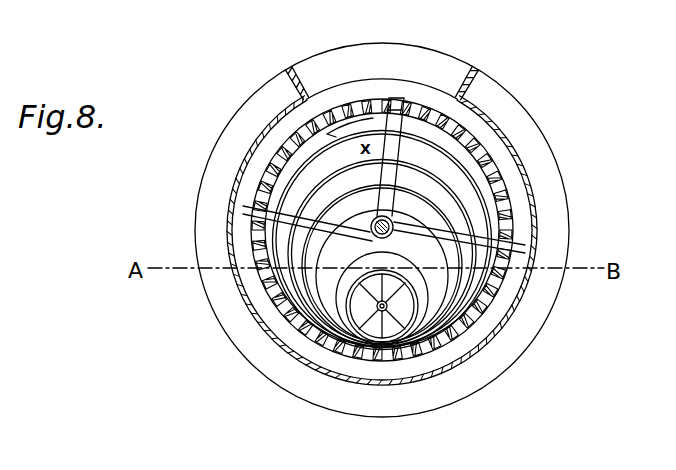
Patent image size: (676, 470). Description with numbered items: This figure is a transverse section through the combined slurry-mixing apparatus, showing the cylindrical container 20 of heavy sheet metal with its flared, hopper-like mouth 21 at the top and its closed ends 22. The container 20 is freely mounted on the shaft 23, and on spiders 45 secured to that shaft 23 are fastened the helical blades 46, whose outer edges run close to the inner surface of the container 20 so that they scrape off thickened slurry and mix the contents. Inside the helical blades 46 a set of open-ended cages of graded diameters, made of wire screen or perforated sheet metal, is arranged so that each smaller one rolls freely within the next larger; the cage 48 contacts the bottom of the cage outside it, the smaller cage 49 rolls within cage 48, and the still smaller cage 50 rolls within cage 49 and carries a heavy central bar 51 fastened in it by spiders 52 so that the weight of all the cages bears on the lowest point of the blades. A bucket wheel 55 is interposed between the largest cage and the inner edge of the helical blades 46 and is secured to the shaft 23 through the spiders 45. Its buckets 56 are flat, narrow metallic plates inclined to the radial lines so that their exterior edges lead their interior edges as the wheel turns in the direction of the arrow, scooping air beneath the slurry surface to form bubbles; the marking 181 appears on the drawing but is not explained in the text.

The container 20 is at (258, 325).
The flared mouth 21 is at (472, 82).
The closed ends 22 is at (414, 52).
The shaft 23 is at (372, 232).
The spiders 45 is at (407, 126).
The helical blades 46 is at (525, 233).
The cylindrical cage 48 is at (513, 210).
The cylindrical cage 49 is at (357, 267).
The cylindrical cage 50 is at (413, 297).
The central bar 51 is at (352, 298).
The spiders 52 is at (410, 282).
The bucket wheel 55 is at (350, 100).
The buckets 56 is at (255, 226).
The scale marking 181 is at (396, 97).